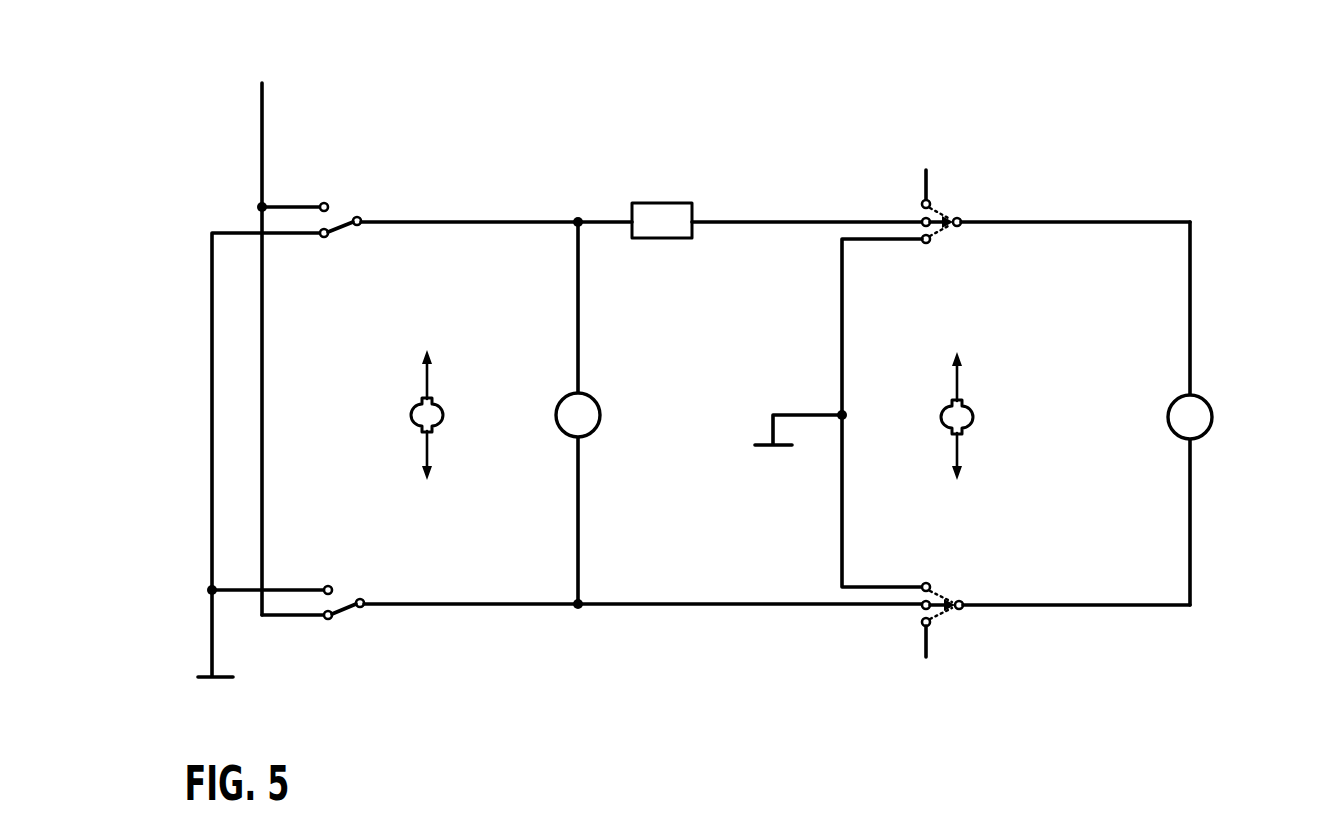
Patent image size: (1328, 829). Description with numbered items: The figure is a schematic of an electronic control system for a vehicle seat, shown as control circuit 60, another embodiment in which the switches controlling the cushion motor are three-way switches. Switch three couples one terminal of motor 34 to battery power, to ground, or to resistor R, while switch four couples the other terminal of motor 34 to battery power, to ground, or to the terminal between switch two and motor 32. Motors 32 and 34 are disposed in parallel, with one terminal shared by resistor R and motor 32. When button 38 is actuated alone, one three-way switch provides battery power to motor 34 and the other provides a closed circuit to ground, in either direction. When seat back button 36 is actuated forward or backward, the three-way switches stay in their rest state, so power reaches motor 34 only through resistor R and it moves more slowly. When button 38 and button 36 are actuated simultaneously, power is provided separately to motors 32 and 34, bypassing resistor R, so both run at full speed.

The control circuit 60 is at (1141, 58).
The motor 32 is at (598, 425).
The motor 34 is at (1200, 398).
The seat back button 36 is at (438, 418).
The button 38 is at (945, 418).
The resistor R is at (662, 238).